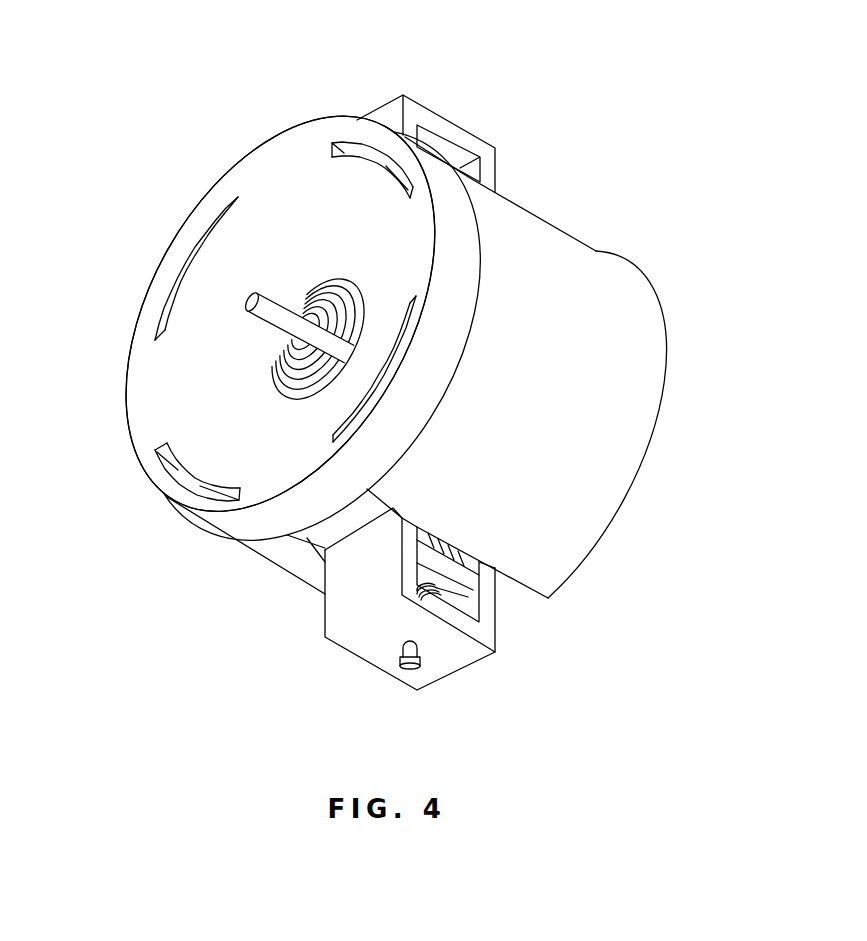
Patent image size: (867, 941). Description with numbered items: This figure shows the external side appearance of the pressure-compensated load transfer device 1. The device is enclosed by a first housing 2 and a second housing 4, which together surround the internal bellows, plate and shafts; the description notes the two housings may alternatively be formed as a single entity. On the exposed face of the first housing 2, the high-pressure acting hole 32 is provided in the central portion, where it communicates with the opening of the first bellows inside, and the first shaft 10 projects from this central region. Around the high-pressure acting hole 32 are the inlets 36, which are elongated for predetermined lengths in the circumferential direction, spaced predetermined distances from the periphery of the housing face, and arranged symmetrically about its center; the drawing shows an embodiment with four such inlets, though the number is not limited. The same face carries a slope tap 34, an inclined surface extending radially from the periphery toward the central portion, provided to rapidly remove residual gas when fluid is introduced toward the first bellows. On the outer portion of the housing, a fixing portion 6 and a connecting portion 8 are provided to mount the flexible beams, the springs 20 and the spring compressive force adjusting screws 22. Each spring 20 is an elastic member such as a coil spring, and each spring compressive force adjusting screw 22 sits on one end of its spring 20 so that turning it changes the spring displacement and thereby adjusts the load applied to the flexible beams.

The pressure-compensated load transfer device 1 is at (613, 150).
The first housing 2 is at (450, 237).
The second housing 4 is at (550, 277).
The fixing portion 6 is at (347, 607).
The connecting portion 8 is at (463, 556).
The first shaft 10 is at (247, 300).
The spring 20 is at (437, 590).
The spring compressive force adjusting screw 22 is at (405, 670).
The high-pressure acting hole 32 is at (320, 284).
The slope tap 34 is at (222, 402).
The inlet 36 is at (225, 215).